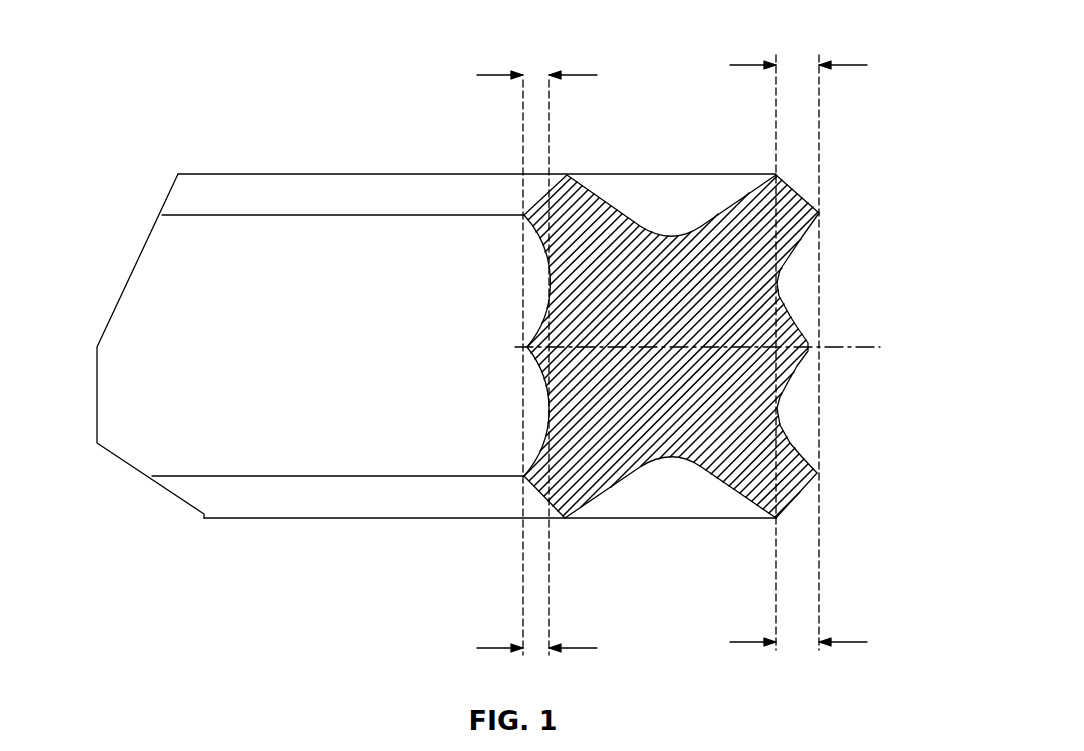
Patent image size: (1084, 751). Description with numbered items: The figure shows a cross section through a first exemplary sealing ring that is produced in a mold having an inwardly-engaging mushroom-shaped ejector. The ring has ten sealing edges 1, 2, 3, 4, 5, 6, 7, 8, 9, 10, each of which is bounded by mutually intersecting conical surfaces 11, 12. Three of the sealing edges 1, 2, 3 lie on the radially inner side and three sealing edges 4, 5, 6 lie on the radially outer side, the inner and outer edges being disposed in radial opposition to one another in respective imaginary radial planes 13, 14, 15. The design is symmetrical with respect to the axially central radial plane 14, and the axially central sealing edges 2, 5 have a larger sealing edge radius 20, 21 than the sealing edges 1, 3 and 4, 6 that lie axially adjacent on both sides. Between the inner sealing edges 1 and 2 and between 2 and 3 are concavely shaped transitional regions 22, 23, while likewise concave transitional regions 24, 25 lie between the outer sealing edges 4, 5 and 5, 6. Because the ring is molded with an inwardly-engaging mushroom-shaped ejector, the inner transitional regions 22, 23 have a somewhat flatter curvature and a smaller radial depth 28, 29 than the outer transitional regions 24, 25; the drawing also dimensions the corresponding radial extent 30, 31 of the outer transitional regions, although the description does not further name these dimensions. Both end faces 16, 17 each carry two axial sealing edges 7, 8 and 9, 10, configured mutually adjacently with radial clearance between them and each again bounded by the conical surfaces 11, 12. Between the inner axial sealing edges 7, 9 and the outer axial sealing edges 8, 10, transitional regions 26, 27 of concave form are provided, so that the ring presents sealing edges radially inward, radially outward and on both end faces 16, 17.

The sealing edge 1 is at (524, 214).
The sealing edge 2 is at (526, 346).
The sealing edge 3 is at (523, 478).
The sealing edge 4 is at (820, 213).
The sealing edge 5 is at (810, 349).
The sealing edge 6 is at (818, 473).
The axial sealing edge 7 is at (568, 174).
The axial sealing edge 8 is at (778, 176).
The axial sealing edge 9 is at (566, 520).
The axial sealing edge 10 is at (778, 518).
The conical surface 11 is at (545, 193).
The conical surface 12 is at (583, 184).
The imaginary radial plane 13 is at (296, 215).
The axially central radial plane 14 is at (878, 346).
The imaginary radial plane 15 is at (329, 518).
The end face 16 is at (643, 192).
The end face 17 is at (648, 504).
The sealing edge radius 20 is at (526, 348).
The sealing edge radius 21 is at (808, 343).
The transitional region 22 is at (548, 280).
The transitional region 23 is at (548, 407).
The transitional region 24 is at (782, 270).
The transitional region 25 is at (779, 403).
The transitional region 26 is at (668, 232).
The transitional region 27 is at (670, 460).
The radial depth 28 is at (537, 74).
The radial depth 29 is at (537, 650).
The right upper depth dimension 30 is at (798, 65).
The right lower depth dimension 31 is at (800, 642).